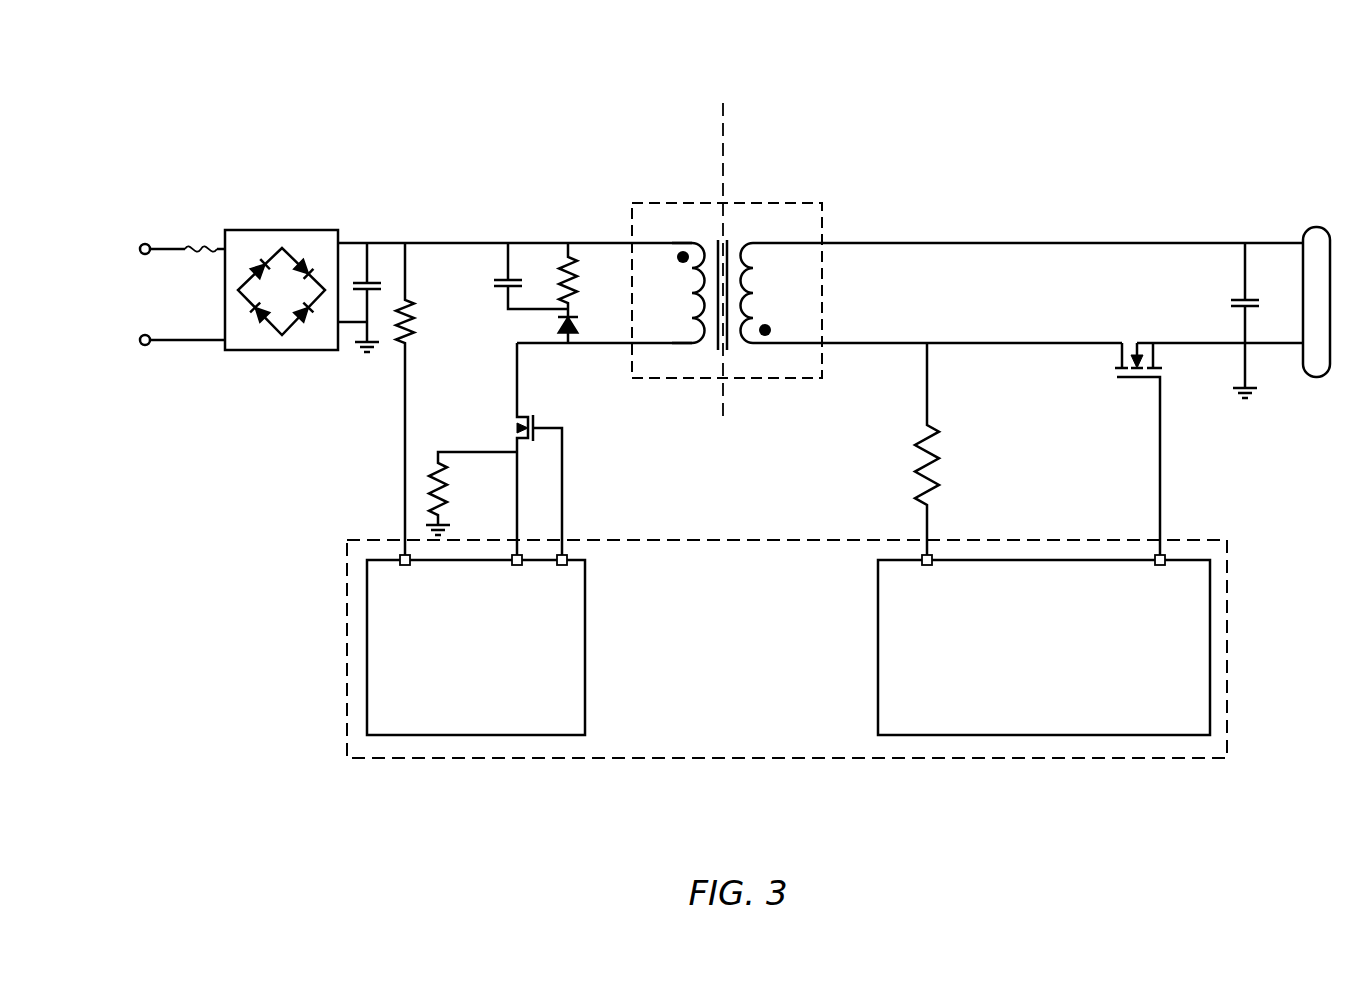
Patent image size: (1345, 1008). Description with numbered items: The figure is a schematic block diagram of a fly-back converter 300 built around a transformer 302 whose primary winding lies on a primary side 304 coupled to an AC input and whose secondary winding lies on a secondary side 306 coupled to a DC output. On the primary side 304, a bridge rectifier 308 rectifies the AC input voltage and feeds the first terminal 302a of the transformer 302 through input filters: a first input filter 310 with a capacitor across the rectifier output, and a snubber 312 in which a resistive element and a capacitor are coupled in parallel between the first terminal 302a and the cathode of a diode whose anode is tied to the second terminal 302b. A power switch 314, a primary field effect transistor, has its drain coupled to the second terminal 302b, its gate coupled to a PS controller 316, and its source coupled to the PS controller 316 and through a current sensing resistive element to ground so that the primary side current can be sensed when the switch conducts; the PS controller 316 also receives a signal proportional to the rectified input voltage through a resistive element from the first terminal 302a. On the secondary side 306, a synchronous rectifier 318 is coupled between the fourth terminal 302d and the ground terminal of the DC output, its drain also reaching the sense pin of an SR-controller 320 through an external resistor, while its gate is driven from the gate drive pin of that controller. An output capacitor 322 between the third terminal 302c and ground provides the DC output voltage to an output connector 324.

The fly-back converter 300 is at (735, 387).
The transformer 302 is at (632, 210).
The first terminal 302a is at (677, 242).
The second terminal 302b is at (676, 344).
The third terminal 302c is at (794, 242).
The fourth terminal 302d is at (792, 344).
The primary side 304 is at (693, 261).
The secondary side 306 is at (762, 119).
The bridge rectifier 308 is at (284, 231).
The first input filter 310 is at (367, 224).
The snubber 312 is at (536, 230).
The power switch 314 is at (508, 417).
The PS controller 316 is at (476, 645).
The synchronous rectifier 318 is at (1116, 328).
The SR-controller 320 is at (1044, 645).
The output capacitor 322 is at (1236, 298).
The output connector 324 is at (1320, 226).